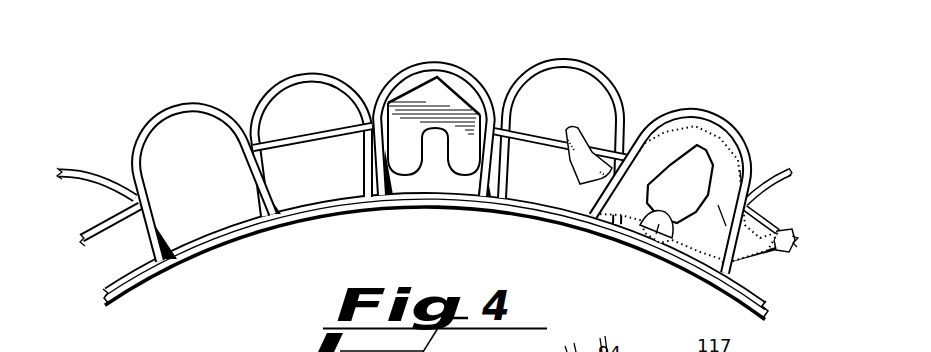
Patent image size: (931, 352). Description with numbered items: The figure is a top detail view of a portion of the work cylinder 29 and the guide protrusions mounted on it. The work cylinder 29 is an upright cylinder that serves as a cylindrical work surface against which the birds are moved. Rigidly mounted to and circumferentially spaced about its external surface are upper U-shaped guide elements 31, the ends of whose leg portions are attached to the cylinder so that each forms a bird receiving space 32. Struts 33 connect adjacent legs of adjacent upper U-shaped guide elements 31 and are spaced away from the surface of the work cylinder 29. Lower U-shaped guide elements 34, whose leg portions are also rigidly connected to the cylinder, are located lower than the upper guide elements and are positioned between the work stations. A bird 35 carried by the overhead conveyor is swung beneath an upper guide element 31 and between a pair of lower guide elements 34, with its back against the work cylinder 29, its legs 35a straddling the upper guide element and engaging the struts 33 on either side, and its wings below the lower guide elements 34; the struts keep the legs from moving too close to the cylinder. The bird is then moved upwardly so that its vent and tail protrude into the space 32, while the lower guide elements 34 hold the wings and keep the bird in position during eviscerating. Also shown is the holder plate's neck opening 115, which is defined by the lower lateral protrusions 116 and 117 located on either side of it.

The work cylinder 29 is at (217, 240).
The upper U-shaped guide element 31 is at (177, 108).
The bird receiving space 32 is at (207, 135).
The strut 33 is at (322, 137).
The lower U-shaped guide element 34 is at (90, 168).
The bird 35 is at (710, 140).
The legs 35a is at (577, 132).
The neck opening 115 is at (435, 160).
The lower lateral protrusion 116 is at (460, 167).
The lower lateral protrusion 117 is at (408, 165).